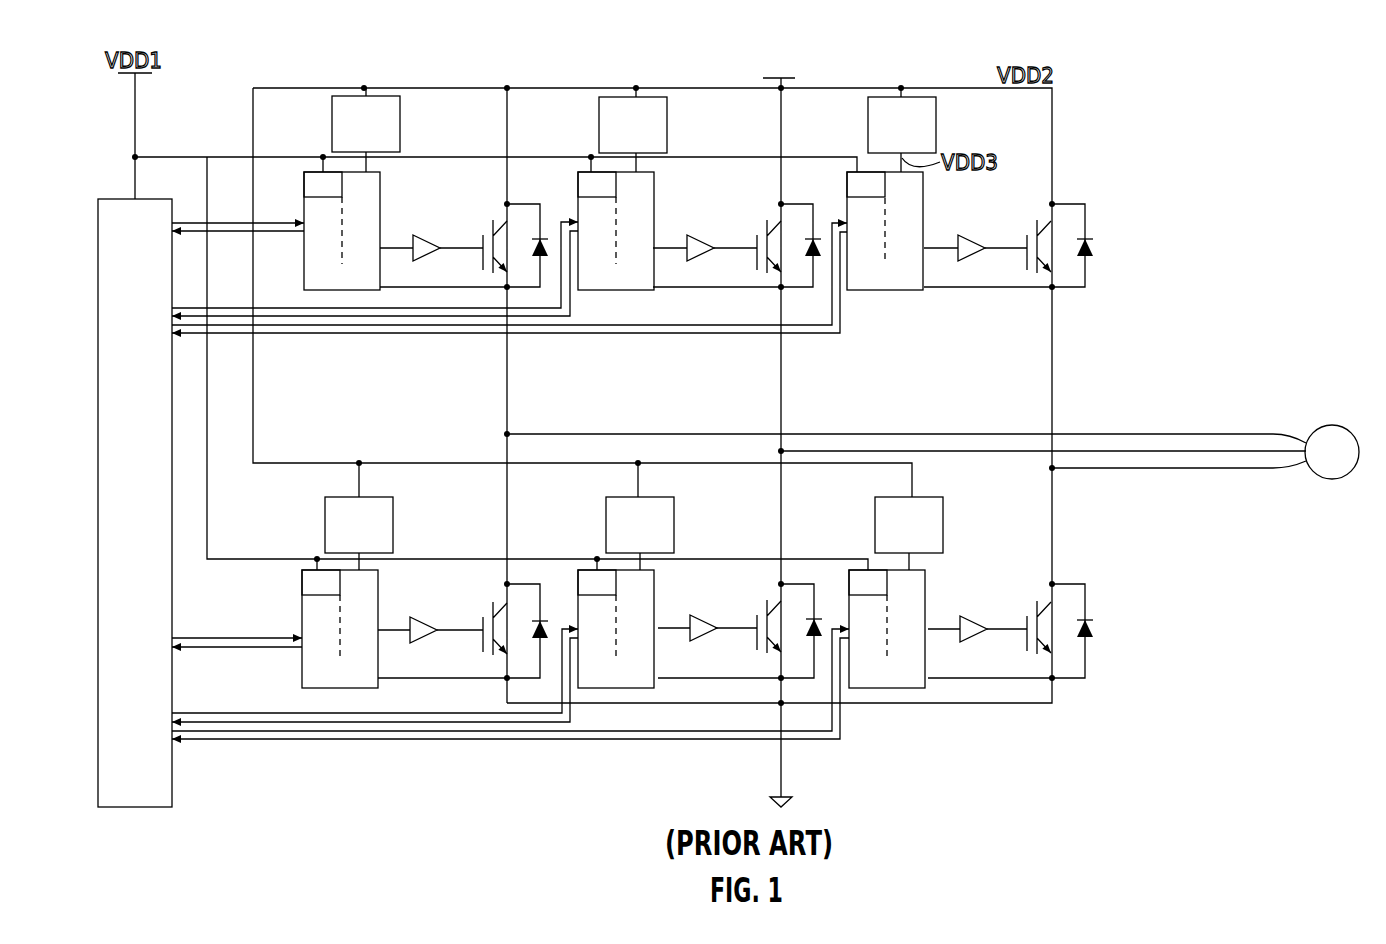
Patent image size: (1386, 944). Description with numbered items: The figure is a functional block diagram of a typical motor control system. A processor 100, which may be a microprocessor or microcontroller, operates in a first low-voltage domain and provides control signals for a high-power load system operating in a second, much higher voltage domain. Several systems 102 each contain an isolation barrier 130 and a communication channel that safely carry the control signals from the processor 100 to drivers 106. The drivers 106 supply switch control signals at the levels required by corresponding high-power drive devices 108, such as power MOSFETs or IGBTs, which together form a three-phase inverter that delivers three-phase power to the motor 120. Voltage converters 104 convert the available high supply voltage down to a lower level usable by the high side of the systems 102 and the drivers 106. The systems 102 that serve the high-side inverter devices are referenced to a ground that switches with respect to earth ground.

The processor 100 is at (153, 514).
The system 102 is at (613, 430).
The voltage converter 104 is at (349, 135).
The driver 106 is at (427, 234).
The high-power drive device 108 is at (482, 258).
The motor 120 is at (1338, 426).
The isolation barrier 130 is at (345, 240).